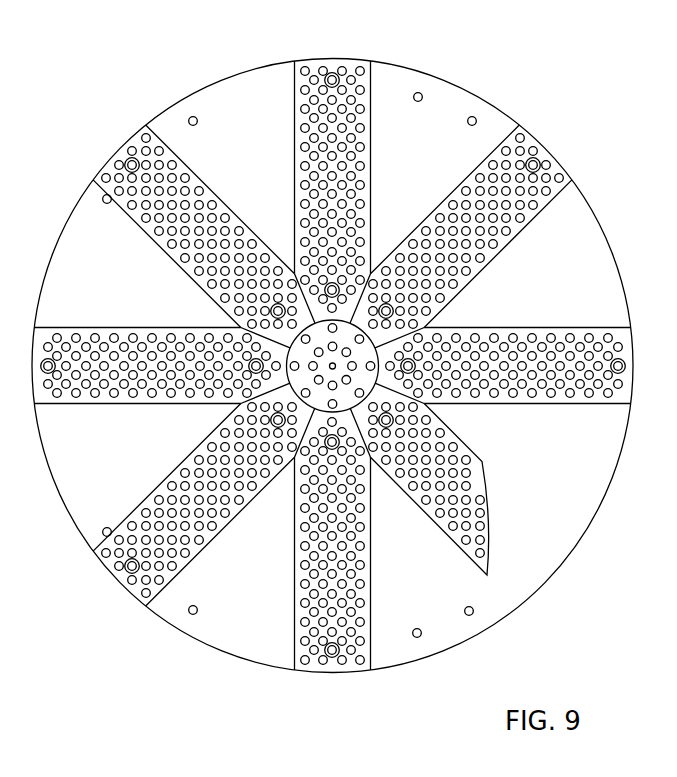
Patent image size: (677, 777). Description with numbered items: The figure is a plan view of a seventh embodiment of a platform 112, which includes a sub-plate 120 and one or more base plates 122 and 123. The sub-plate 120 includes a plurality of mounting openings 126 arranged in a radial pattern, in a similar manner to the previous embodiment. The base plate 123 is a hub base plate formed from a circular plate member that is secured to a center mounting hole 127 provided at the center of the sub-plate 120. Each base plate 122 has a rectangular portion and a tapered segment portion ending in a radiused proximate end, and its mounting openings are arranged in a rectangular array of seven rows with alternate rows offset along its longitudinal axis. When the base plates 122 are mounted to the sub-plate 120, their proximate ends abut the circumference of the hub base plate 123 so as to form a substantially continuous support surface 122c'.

The platform 112 is at (517, 96).
The sub-plate 120 is at (443, 96).
The base plate 122 is at (529, 221).
The substantially continuous support surface 122c' is at (418, 484).
The hub base plate 123 is at (340, 330).
The mounting openings 126 is at (103, 531).
The center mounting hole 127 is at (334, 364).